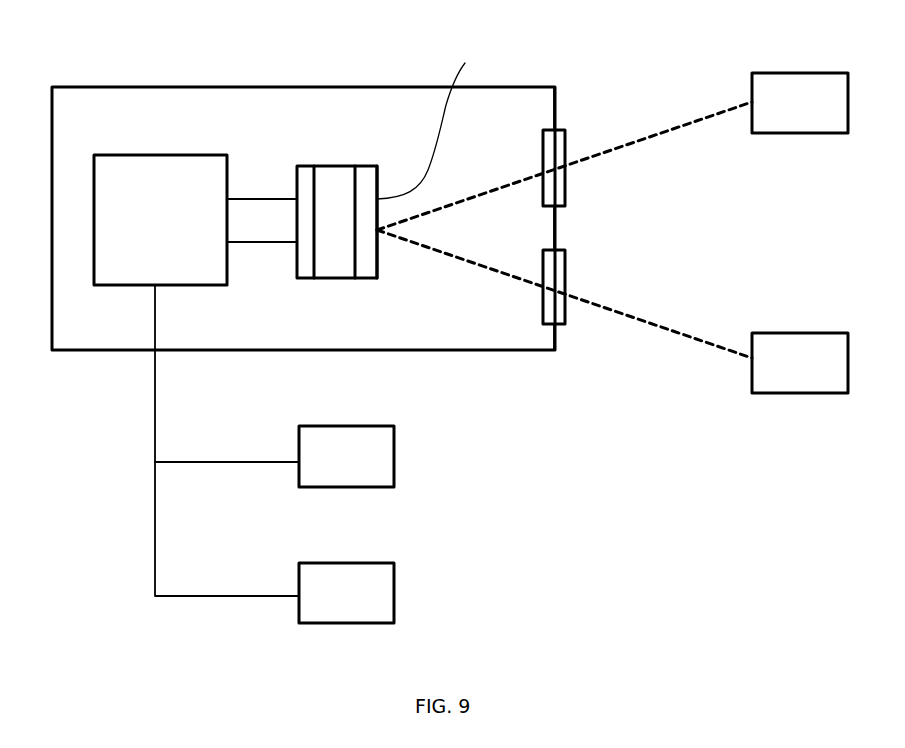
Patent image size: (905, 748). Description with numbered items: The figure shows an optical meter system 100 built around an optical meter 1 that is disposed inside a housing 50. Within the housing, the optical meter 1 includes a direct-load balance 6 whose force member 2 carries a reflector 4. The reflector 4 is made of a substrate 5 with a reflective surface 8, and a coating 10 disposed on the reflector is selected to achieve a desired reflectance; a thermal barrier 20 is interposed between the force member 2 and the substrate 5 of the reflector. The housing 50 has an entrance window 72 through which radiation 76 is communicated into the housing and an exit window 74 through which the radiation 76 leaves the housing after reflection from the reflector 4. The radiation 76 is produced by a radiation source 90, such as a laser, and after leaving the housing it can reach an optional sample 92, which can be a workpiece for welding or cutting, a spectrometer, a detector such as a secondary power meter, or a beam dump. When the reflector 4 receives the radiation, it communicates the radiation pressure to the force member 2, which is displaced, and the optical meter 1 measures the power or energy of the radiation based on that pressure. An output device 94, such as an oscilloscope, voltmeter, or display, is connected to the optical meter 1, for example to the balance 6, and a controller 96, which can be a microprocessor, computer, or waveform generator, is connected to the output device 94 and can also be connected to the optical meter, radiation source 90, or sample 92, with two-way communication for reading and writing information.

The optical meter system 100 is at (56, 34).
The housing 50 is at (104, 87).
The optical meter 1 is at (215, 112).
The direct-load balance 6 is at (181, 177).
The force member 2 is at (268, 220).
The reflector 4 is at (347, 283).
The thermal barrier 20 is at (305, 180).
The substrate 5 is at (336, 175).
The coating 10 is at (366, 175).
The reflective surface 8 is at (428, 121).
The entrance window 72 is at (557, 147).
The exit window 74 is at (553, 312).
The radiation 76 is at (687, 337).
The radiation source 90 is at (813, 85).
The sample 92 is at (822, 378).
The output device 94 is at (380, 463).
The controller 96 is at (380, 595).